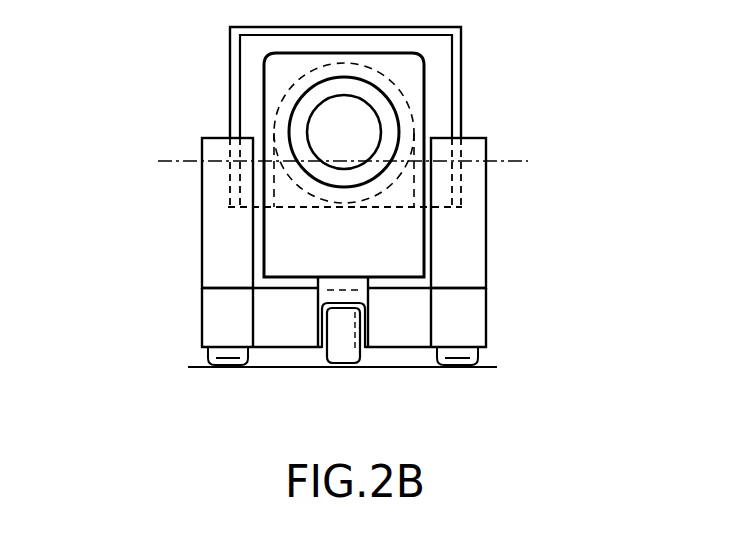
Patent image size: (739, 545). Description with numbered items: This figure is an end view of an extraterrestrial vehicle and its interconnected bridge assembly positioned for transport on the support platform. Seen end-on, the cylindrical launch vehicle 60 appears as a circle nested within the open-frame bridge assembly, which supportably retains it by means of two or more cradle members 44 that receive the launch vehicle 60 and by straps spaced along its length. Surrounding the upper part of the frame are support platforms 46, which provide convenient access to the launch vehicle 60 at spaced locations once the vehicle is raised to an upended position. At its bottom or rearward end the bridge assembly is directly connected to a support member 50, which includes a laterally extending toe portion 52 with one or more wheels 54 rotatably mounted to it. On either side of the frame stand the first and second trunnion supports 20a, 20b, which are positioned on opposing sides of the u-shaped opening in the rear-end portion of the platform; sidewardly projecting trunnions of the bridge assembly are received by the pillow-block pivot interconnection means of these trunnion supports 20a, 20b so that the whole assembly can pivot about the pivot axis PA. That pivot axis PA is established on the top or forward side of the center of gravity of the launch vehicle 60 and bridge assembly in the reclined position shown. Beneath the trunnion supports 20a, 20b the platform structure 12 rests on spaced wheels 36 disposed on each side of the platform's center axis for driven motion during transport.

The base 12 is at (200, 325).
The first trunnion support 20a is at (190, 240).
The second trunnion support 20b is at (500, 228).
The wheels 36 is at (465, 352).
The cradle members 44 is at (403, 192).
The support platforms 46 is at (245, 47).
The support member 50 is at (403, 248).
The toe portion 52 is at (358, 296).
The wheels 54 is at (345, 349).
The cylindrical launch vehicle 60 is at (387, 92).
The pivot axis PA is at (344, 162).